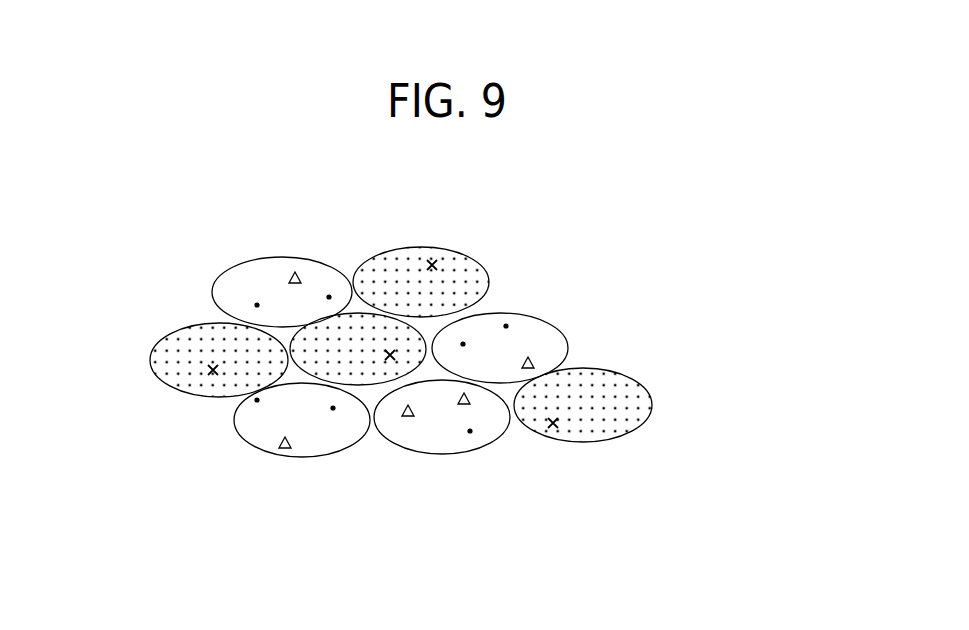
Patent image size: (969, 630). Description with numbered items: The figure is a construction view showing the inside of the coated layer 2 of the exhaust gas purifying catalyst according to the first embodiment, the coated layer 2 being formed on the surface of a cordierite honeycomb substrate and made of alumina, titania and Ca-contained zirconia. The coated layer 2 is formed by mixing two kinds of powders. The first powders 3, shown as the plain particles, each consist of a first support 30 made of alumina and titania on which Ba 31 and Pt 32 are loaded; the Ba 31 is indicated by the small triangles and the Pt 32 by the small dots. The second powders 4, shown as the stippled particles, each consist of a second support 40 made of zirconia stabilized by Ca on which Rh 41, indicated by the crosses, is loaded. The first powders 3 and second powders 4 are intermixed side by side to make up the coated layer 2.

The coated layer 2 is at (475, 354).
The first powders 3 is at (323, 314).
The second powders 4 is at (527, 354).
The first support 30 is at (238, 282).
The Ba 31 is at (294, 272).
The Pt 32 is at (257, 305).
The second support 40 is at (637, 403).
The Rh 41 is at (555, 430).